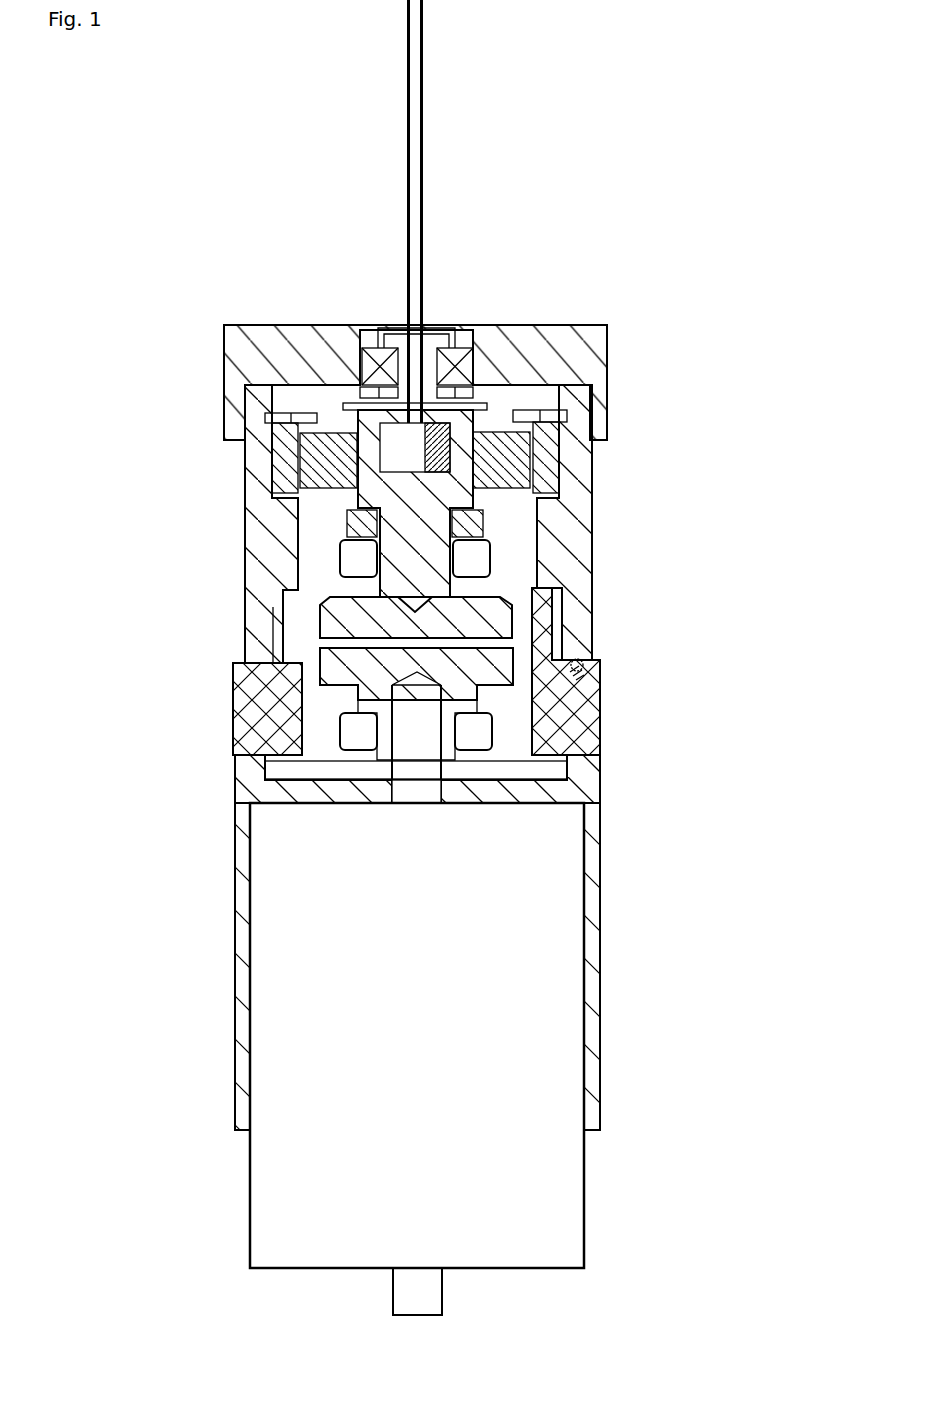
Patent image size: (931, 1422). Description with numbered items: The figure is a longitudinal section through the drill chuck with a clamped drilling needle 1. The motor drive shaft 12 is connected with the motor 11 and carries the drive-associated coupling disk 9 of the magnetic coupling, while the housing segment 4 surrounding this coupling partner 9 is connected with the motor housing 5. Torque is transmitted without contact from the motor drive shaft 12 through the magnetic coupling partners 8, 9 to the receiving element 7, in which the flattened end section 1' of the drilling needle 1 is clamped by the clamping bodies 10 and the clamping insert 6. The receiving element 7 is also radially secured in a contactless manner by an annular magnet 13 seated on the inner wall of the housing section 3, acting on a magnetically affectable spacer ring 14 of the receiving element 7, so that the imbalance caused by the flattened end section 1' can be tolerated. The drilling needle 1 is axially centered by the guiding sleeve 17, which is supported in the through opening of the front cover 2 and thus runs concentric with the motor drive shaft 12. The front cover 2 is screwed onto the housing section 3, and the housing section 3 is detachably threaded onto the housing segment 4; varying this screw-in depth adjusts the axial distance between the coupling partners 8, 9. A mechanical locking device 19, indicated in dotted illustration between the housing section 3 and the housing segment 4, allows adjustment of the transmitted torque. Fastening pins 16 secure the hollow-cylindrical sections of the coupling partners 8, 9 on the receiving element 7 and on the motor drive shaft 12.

The drilling needle 1 is at (449, 202).
The flattened end section 1' is at (478, 363).
The front cover 2 is at (256, 347).
The housing section 3 is at (280, 531).
The housing segment 4 is at (262, 710).
The motor housing 5 is at (262, 780).
The clamping insert 6 is at (357, 418).
The receiving element 7 is at (430, 490).
The coupling partner 8 is at (330, 620).
The drive-associated coupling disk 9 is at (335, 665).
The clamping bodies 10 is at (450, 433).
The motor 11 is at (298, 896).
The motor drive shaft 12 is at (420, 786).
The annular magnet 13 is at (285, 492).
The spacer ring 14 is at (300, 456).
The fastening pins 16 is at (480, 550).
The guiding sleeve 17 is at (389, 327).
The mechanical locking device 19 is at (588, 667).